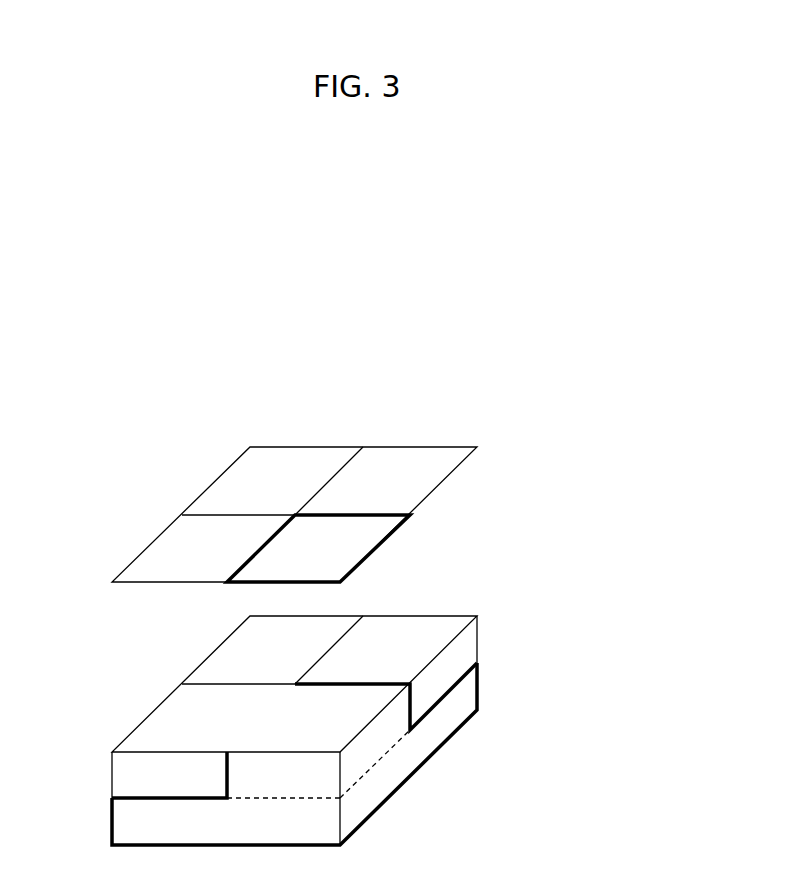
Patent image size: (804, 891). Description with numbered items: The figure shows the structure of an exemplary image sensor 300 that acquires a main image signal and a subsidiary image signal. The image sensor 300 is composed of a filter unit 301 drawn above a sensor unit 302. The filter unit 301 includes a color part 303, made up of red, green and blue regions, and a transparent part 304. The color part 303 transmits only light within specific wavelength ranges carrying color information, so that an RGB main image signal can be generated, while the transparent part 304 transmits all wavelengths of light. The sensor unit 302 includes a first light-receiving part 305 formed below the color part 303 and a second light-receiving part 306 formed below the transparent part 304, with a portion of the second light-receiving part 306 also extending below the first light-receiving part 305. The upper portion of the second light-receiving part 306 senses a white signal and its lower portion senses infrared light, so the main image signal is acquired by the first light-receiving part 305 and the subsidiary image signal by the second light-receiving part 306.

The image sensor 300 is at (550, 377).
The filter unit 301 is at (345, 486).
The sensor unit 302 is at (327, 738).
The color part 303 is at (170, 543).
The transparent part 304 is at (352, 544).
The first light-receiving part 305 is at (125, 773).
The second light-receiving part 306 is at (377, 792).